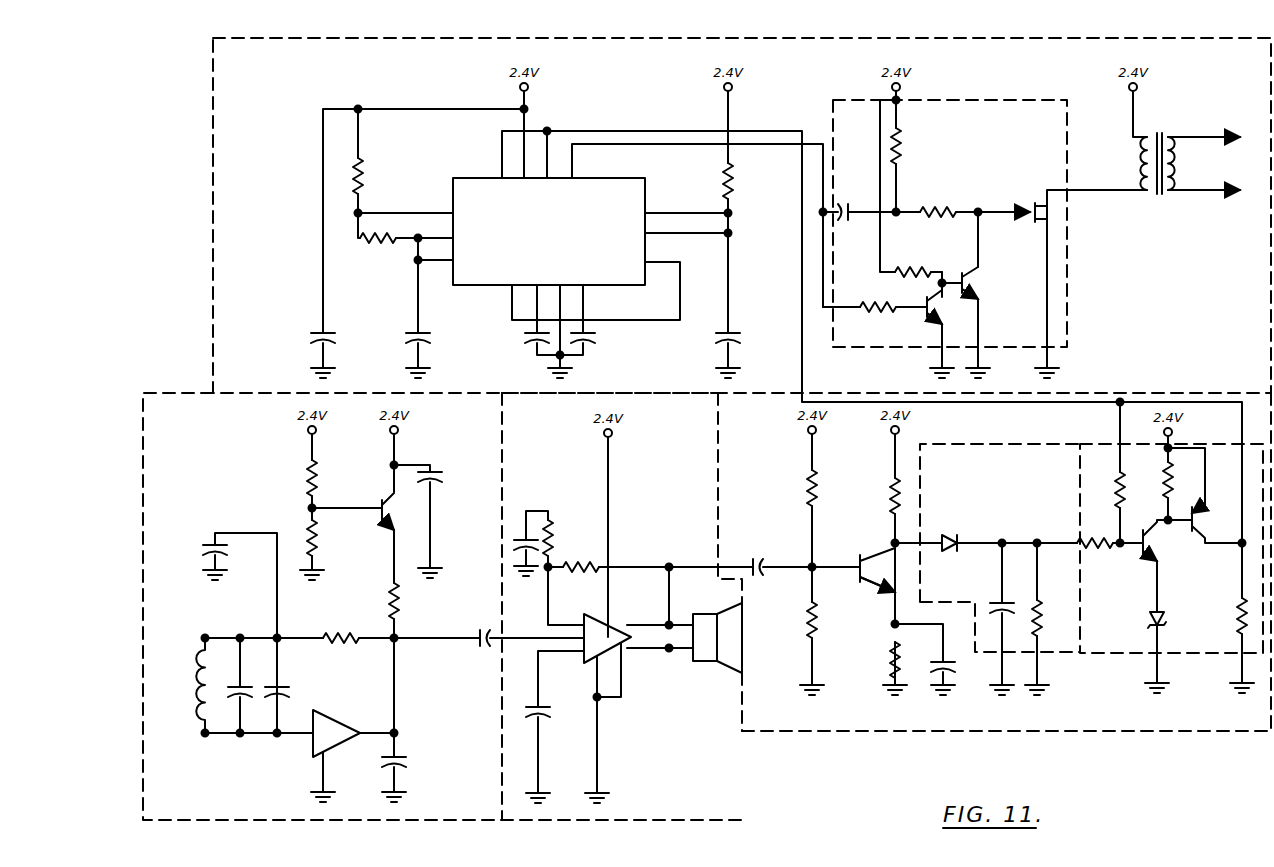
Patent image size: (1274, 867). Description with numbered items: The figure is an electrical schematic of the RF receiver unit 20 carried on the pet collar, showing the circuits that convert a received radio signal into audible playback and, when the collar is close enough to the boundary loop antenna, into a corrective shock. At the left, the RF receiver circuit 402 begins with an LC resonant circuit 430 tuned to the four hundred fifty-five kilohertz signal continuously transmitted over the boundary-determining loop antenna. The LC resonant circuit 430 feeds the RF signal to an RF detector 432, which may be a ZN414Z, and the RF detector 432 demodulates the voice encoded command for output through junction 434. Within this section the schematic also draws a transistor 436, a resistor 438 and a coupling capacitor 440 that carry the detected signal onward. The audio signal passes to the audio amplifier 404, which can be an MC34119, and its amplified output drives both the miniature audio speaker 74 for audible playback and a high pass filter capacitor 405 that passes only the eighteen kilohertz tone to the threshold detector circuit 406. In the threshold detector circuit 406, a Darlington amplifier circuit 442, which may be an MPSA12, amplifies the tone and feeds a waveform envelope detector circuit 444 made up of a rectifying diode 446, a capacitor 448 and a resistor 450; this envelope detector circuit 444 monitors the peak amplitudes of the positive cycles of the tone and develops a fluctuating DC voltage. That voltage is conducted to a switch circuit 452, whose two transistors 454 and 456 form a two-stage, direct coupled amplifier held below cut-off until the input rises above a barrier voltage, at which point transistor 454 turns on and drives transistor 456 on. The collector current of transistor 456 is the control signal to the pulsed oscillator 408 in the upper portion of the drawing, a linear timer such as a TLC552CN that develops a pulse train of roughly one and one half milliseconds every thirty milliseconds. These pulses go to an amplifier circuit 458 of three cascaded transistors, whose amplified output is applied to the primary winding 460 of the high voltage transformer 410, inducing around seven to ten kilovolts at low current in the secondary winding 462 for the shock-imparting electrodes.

The RF receiver unit 20 is at (213, 150).
The pulsed oscillator 408 is at (463, 178).
The high voltage transformer 410 is at (1162, 141).
The primary winding 460 is at (1142, 161).
The secondary winding 462 is at (1174, 161).
The amplifier circuit 458 is at (1067, 283).
The RF receiver circuit 402 is at (143, 513).
The LC resonant circuit 430 is at (228, 726).
The RF detector 432 is at (315, 750).
The junction 434 is at (397, 642).
The transistor 436 is at (378, 516).
The resistor 438 is at (392, 594).
The coupling capacitor 440 is at (481, 626).
The audio amplifier 404 is at (626, 642).
The miniature audio speaker 74 is at (735, 645).
The high pass filter capacitor 405 is at (758, 556).
The threshold detector circuit 406 is at (1107, 731).
The Darlington amplifier circuit 442 is at (874, 550).
The waveform envelope detector circuit 444 is at (988, 653).
The rectifying diode 446 is at (948, 536).
The capacitor 448 is at (996, 605).
The resistor 450 is at (1040, 598).
The switch circuit 452 is at (1120, 655).
The transistor 454 is at (1140, 560).
The transistor 456 is at (1195, 540).